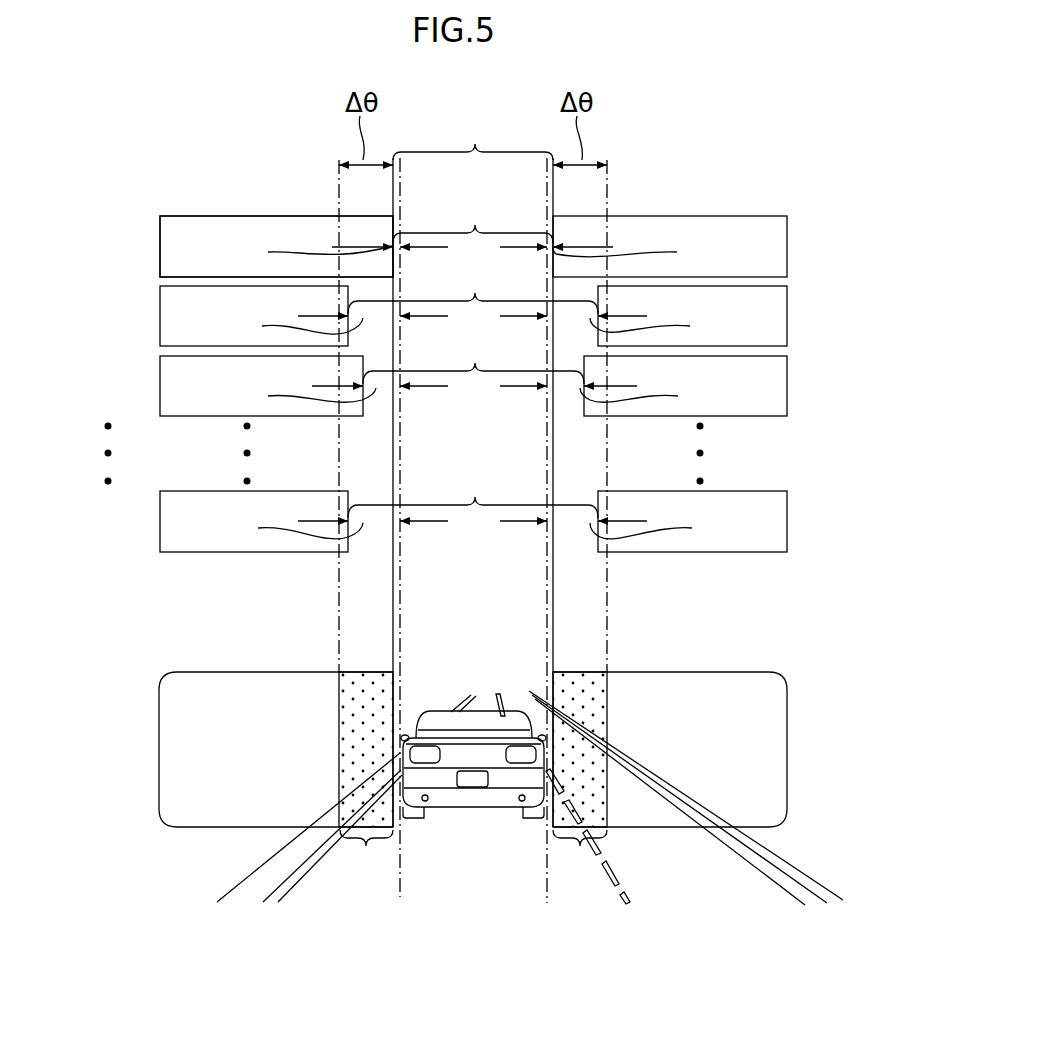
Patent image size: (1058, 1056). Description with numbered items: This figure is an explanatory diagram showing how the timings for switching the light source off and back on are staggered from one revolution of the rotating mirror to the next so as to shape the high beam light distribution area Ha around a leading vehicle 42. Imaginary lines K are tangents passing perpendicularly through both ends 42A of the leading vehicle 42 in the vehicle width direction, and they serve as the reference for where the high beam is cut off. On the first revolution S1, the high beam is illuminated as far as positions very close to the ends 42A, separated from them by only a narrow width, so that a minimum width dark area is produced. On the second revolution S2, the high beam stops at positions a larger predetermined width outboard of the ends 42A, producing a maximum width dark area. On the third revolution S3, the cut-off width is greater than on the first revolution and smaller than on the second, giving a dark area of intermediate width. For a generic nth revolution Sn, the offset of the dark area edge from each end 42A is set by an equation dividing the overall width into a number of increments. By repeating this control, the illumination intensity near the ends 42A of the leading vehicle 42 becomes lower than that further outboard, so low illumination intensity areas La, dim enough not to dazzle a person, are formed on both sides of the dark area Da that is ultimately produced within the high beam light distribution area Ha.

The leading vehicle 42 is at (472, 811).
The both ends in the vehicle width direction of the leading vehicle 42A is at (390, 768).
The high beam light distribution area Ha is at (232, 216).
The low illumination intensity area La is at (365, 848).
The imaginary line K is at (400, 898).
The dark area Da is at (473, 310).
The first revolution of the rotating mirror S1 is at (414, 246).
The second revolution of the rotating mirror S2 is at (440, 316).
The third revolution of the rotating mirror S3 is at (440, 386).
The nth revolution of the rotating mirror Sn is at (440, 521).